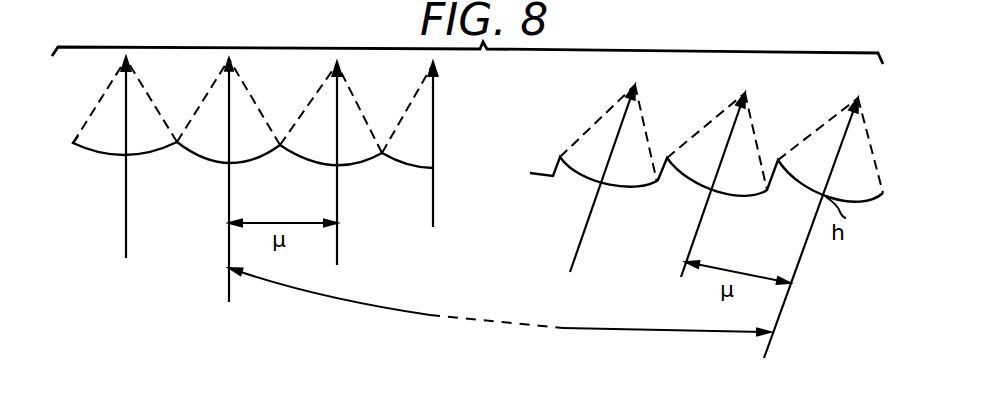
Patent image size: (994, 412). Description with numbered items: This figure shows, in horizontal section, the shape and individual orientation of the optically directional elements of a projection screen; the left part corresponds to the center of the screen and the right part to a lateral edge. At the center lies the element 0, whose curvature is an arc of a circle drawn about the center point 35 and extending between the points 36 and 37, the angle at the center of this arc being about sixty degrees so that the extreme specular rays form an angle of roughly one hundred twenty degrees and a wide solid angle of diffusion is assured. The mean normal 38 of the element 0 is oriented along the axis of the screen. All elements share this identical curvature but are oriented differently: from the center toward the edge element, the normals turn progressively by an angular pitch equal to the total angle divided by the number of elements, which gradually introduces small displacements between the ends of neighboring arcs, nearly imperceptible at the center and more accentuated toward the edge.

The center point 35 is at (233, 62).
The element o 0 is at (226, 164).
The point 36 is at (178, 145).
The point 37 is at (280, 147).
The mean normal 38 is at (225, 282).